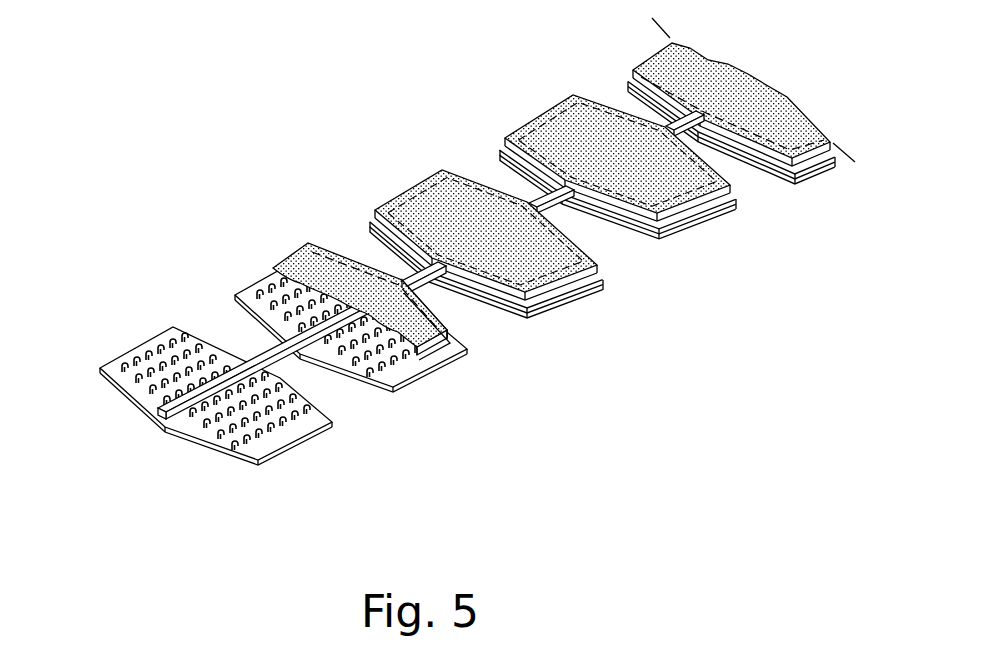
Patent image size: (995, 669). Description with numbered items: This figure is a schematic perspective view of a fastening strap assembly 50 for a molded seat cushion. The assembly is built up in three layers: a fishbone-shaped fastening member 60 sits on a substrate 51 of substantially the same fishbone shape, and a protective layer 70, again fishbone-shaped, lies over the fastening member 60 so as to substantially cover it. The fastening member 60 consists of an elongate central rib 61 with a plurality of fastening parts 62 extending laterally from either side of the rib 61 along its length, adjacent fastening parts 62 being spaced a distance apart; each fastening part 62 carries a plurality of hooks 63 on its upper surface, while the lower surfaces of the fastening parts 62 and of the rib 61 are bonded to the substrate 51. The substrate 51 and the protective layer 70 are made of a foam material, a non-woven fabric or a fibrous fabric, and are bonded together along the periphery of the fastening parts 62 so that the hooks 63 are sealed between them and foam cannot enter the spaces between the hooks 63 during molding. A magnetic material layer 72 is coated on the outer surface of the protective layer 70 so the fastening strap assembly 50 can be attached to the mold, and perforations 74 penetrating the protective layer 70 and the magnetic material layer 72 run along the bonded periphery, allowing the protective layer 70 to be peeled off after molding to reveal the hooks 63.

The fastening strap assembly 50 is at (441, 258).
The substrate 51 is at (403, 388).
The fastening member 60 is at (194, 389).
The central rib 61 is at (248, 340).
The fastening part 62 is at (265, 376).
The hook 63 is at (272, 443).
The protective layer 70 is at (612, 168).
The magnetic material layer 72 is at (302, 262).
The perforation 74 is at (432, 183).